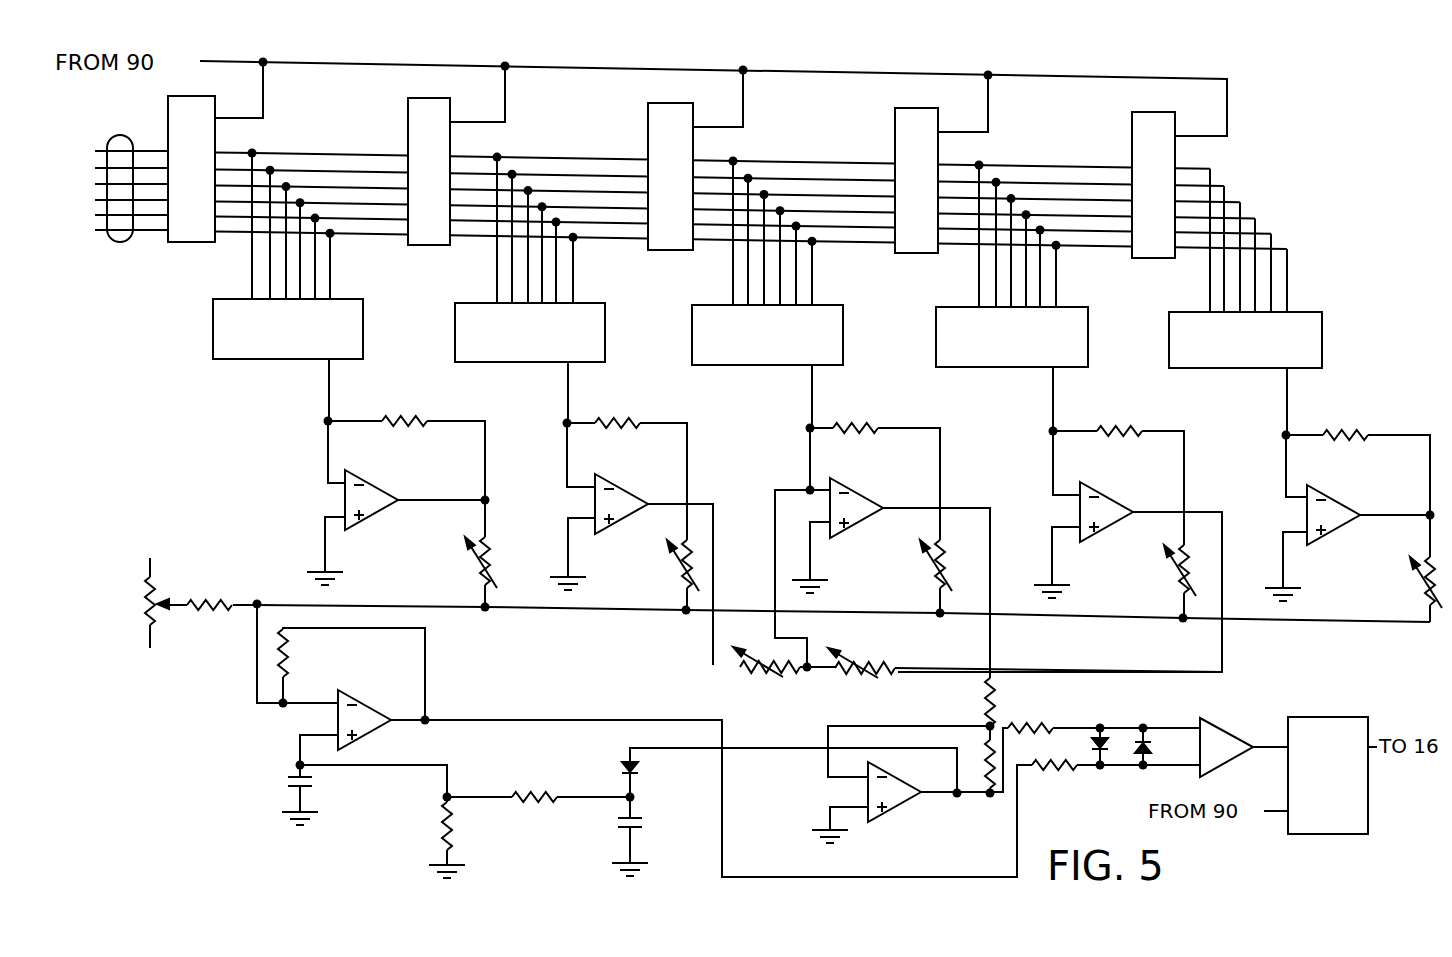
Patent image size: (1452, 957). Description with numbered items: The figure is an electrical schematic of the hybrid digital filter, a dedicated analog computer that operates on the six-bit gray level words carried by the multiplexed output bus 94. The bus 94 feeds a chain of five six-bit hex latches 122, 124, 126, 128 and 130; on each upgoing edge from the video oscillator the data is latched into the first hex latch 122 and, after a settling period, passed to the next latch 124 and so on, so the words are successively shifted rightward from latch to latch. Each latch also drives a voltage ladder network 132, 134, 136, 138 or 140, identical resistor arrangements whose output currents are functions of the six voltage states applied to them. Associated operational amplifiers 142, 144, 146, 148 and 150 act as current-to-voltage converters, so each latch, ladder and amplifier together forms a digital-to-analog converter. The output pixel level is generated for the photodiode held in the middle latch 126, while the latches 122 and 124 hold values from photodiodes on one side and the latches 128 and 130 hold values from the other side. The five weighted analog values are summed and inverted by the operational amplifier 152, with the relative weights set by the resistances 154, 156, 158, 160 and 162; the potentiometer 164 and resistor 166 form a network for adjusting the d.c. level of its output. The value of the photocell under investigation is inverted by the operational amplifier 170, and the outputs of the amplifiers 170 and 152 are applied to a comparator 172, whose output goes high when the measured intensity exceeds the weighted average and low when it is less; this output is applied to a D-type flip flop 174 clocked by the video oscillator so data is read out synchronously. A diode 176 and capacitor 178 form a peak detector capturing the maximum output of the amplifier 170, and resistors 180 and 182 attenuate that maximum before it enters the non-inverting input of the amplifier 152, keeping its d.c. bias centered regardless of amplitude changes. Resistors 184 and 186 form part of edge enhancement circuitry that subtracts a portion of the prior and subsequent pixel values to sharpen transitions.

The output bus 94 is at (146, 128).
The hex latch 122 is at (216, 132).
The hex latch 124 is at (408, 128).
The hex latch 126 is at (648, 128).
The hex latch 128 is at (895, 135).
The hex latch 130 is at (1132, 140).
The voltage ladder network 132 is at (302, 360).
The voltage ladder network 134 is at (548, 362).
The voltage ladder network 136 is at (778, 365).
The voltage ladder network 138 is at (1022, 367).
The voltage ladder network 140 is at (1248, 368).
The operational amplifier 142 is at (378, 488).
The operational amplifier 144 is at (648, 482).
The operational amplifier 146 is at (855, 488).
The operational amplifier 148 is at (1114, 500).
The operational amplifier 150 is at (1348, 502).
The operational amplifier 152 is at (385, 694).
The resistance 154 is at (478, 571).
The resistance 156 is at (680, 572).
The resistance 158 is at (935, 575).
The resistance 160 is at (1178, 570).
The resistance 162 is at (1420, 578).
The potentiometer 164 is at (146, 592).
The resistor 166 is at (216, 598).
The operational amplifier 170 is at (898, 805).
The comparator 172 is at (1232, 728).
The D-type flip flop 174 is at (1338, 835).
The diode 176 is at (640, 766).
The capacitor 178 is at (640, 828).
The resistor 180 is at (440, 826).
The resistor 182 is at (546, 806).
The resistor 184 is at (770, 672).
The resistor 186 is at (870, 680).